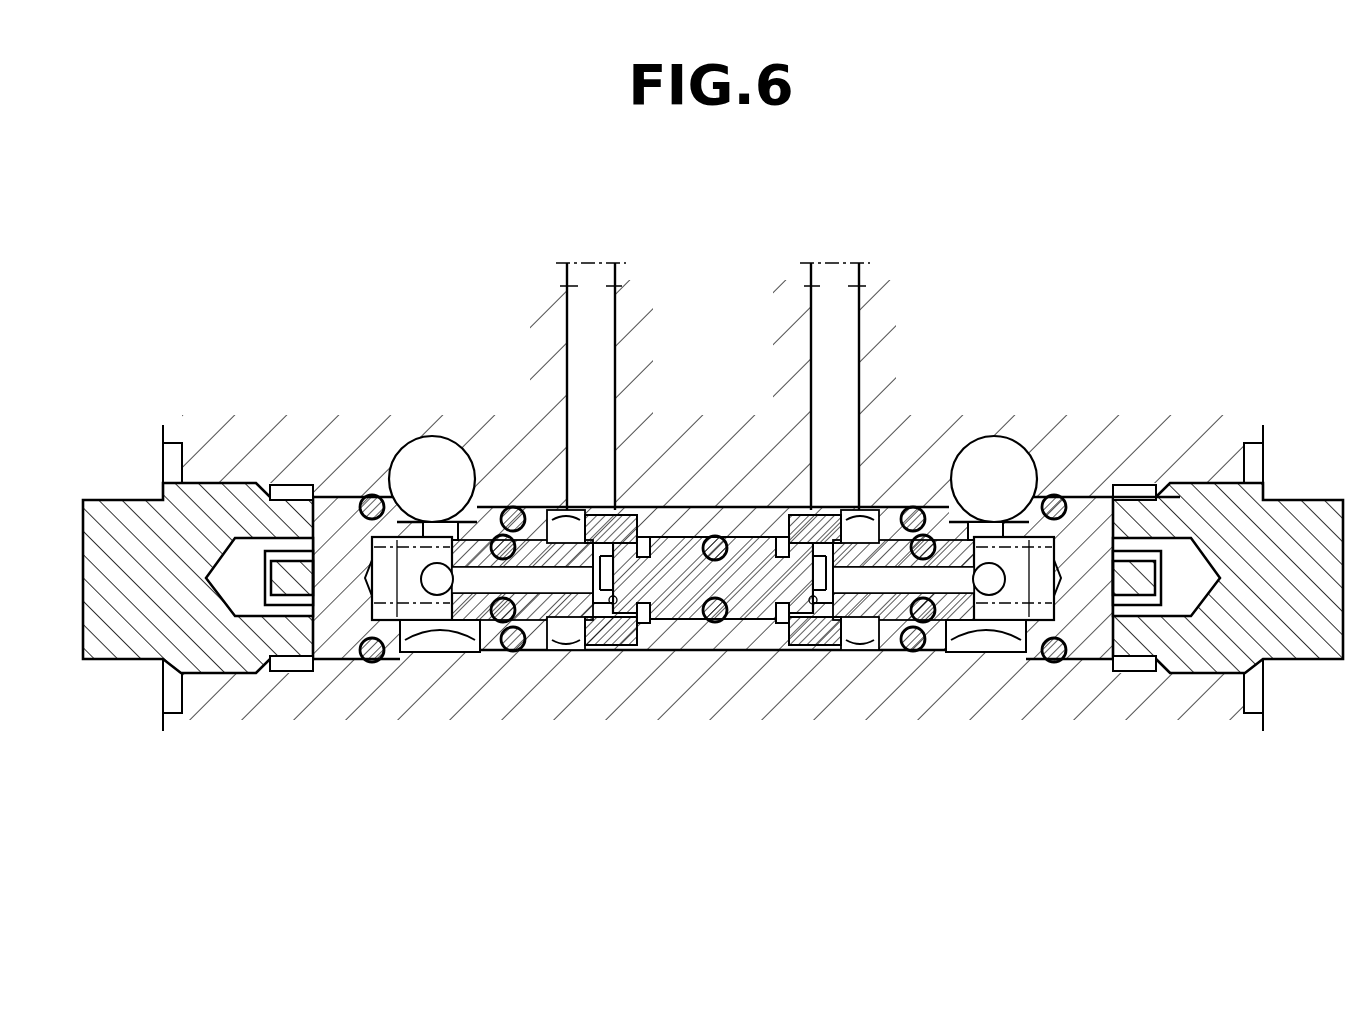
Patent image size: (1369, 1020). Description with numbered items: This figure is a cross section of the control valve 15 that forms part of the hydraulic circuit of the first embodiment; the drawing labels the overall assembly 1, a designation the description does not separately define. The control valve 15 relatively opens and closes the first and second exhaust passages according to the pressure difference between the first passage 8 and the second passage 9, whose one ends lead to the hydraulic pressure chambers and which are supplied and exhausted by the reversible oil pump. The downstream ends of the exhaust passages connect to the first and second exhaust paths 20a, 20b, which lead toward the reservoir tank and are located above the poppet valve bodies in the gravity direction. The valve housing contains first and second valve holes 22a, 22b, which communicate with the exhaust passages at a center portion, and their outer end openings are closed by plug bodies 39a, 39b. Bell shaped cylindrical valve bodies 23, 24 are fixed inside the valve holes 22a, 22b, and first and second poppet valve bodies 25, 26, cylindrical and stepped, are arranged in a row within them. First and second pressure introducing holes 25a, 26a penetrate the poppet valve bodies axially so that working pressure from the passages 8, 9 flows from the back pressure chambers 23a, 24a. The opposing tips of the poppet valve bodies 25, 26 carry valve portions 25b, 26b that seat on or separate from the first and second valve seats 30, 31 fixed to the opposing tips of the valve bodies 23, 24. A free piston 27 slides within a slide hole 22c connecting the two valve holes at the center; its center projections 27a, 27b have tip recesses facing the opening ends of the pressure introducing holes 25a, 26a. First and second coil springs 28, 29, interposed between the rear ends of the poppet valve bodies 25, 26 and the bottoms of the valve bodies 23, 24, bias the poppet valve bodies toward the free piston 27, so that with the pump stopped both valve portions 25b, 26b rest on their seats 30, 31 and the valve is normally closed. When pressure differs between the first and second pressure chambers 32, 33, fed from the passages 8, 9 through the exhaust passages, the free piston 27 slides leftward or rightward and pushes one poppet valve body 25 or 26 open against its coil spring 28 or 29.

The valve device 1 is at (962, 330).
The first passage 8 is at (1002, 455).
The second passage 9 is at (425, 455).
The control valve 15 is at (1123, 471).
The first exhaust path 20a is at (572, 286).
The second exhaust path 20b is at (854, 286).
The first valve hole 22a is at (1077, 494).
The second valve hole 22b is at (332, 496).
The slide hole 22c is at (748, 535).
The valve body 23 is at (1087, 620).
The back pressure chamber 23a is at (1021, 592).
The valve body 24 is at (325, 585).
The back pressure chamber 24a is at (405, 592).
The first poppet valve body 25 is at (888, 553).
The first pressure introducing hole 25a is at (944, 648).
The valve portion 25b is at (858, 640).
The second poppet valve body 26 is at (545, 553).
The second pressure introducing hole 26a is at (482, 648).
The valve portion 26b is at (572, 637).
The free piston 27 is at (700, 548).
The center projection 27a is at (800, 606).
The center projection 27b is at (621, 606).
The first coil spring 28 is at (989, 596).
The second coil spring 29 is at (437, 596).
The first valve seat 30 is at (822, 605).
The second valve seat 31 is at (612, 605).
The first pressure chamber 32 is at (777, 615).
The second pressure chamber 33 is at (641, 615).
The plug body 39a is at (1305, 627).
The plug body 39b is at (120, 622).